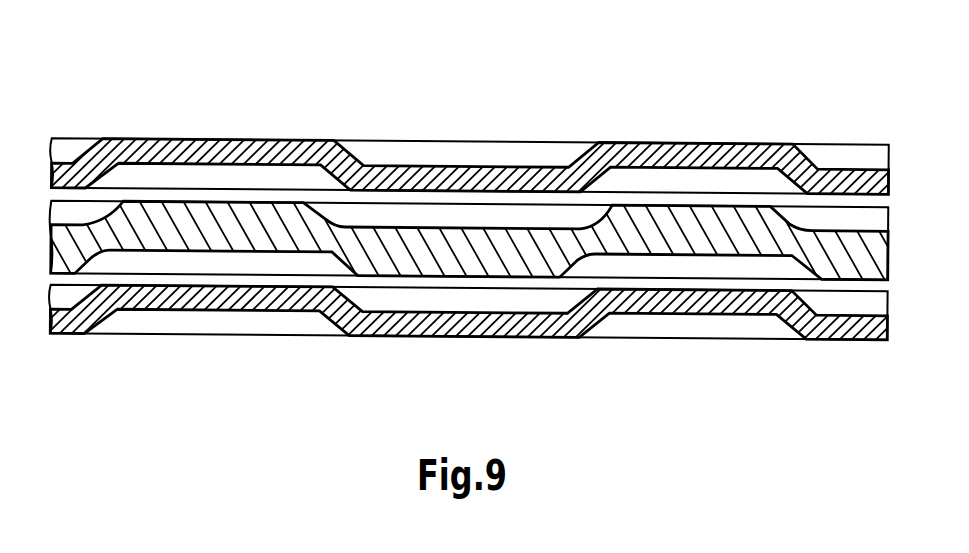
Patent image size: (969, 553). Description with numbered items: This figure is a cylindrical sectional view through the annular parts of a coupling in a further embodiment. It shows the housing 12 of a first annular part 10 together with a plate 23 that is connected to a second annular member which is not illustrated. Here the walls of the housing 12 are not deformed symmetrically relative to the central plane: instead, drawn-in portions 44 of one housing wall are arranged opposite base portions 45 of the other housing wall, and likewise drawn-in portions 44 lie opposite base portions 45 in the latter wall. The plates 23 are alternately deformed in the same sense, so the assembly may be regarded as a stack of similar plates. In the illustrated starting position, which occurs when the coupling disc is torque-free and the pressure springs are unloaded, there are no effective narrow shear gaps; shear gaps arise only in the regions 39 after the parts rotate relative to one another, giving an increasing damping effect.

The first annular part 10 is at (365, 130).
The housing 12 is at (335, 337).
The plate 23 is at (537, 283).
The shear gap region 39 is at (653, 283).
The drawn-in portion 44 is at (475, 177).
The base portion 45 is at (430, 370).